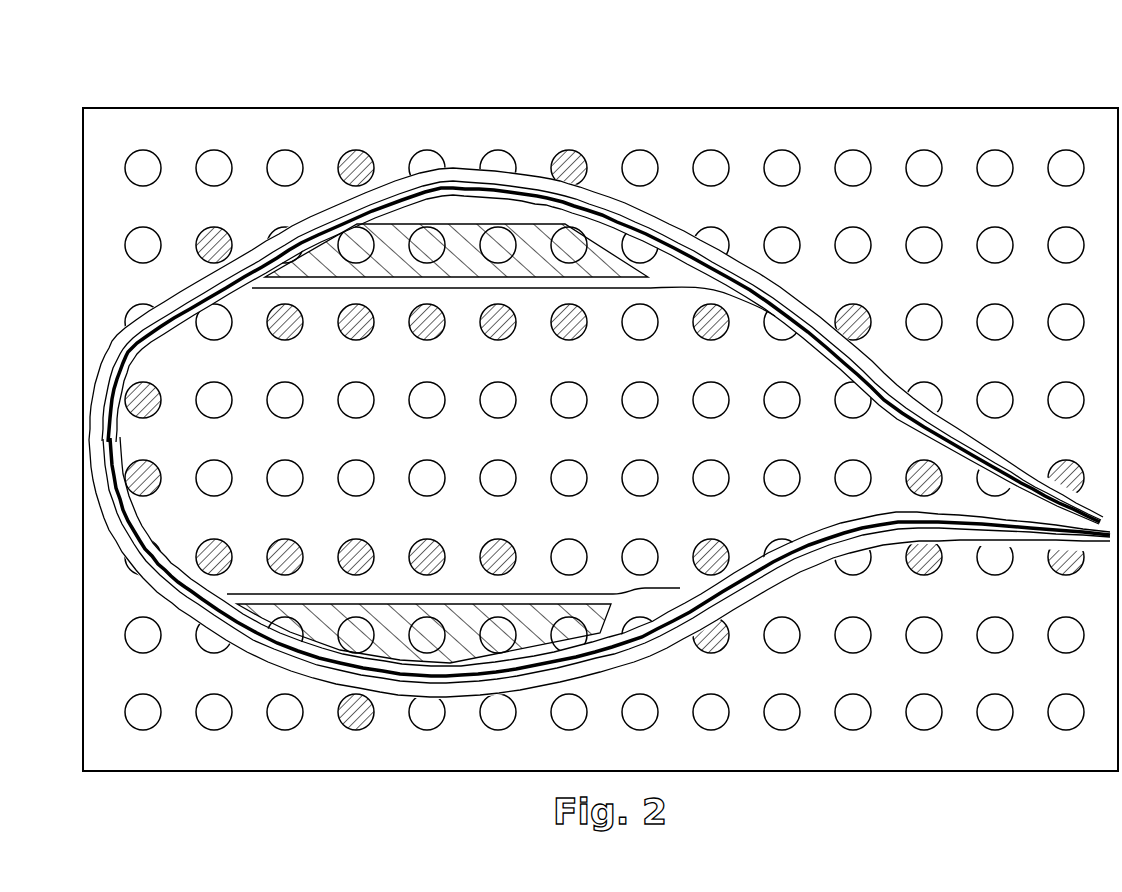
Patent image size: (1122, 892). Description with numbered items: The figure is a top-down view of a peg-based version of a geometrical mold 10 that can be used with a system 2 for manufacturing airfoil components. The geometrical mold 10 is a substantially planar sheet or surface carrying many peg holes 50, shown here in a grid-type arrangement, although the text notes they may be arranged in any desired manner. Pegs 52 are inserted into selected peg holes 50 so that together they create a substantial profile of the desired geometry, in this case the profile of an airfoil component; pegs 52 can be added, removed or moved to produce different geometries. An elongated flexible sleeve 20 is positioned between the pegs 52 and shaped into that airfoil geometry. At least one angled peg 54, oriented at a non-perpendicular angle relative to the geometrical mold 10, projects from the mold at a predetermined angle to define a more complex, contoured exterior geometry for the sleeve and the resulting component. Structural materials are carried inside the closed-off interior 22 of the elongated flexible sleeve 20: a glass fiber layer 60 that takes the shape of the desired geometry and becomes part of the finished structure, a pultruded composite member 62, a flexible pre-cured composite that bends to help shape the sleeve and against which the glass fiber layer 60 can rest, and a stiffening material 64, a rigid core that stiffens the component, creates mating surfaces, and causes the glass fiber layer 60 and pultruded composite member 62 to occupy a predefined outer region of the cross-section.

The system 2 is at (599, 363).
The geometrical mold 10 is at (832, 108).
The elongated flexible sleeve 20 is at (300, 215).
The closed-off interior 22 is at (668, 272).
The peg holes 50 is at (1062, 160).
The pegs 52 is at (568, 158).
The angled peg 54 is at (857, 317).
The glass fiber layer 60 is at (655, 283).
The pultruded composite member 62 is at (535, 200).
The stiffening material 64 is at (212, 240).